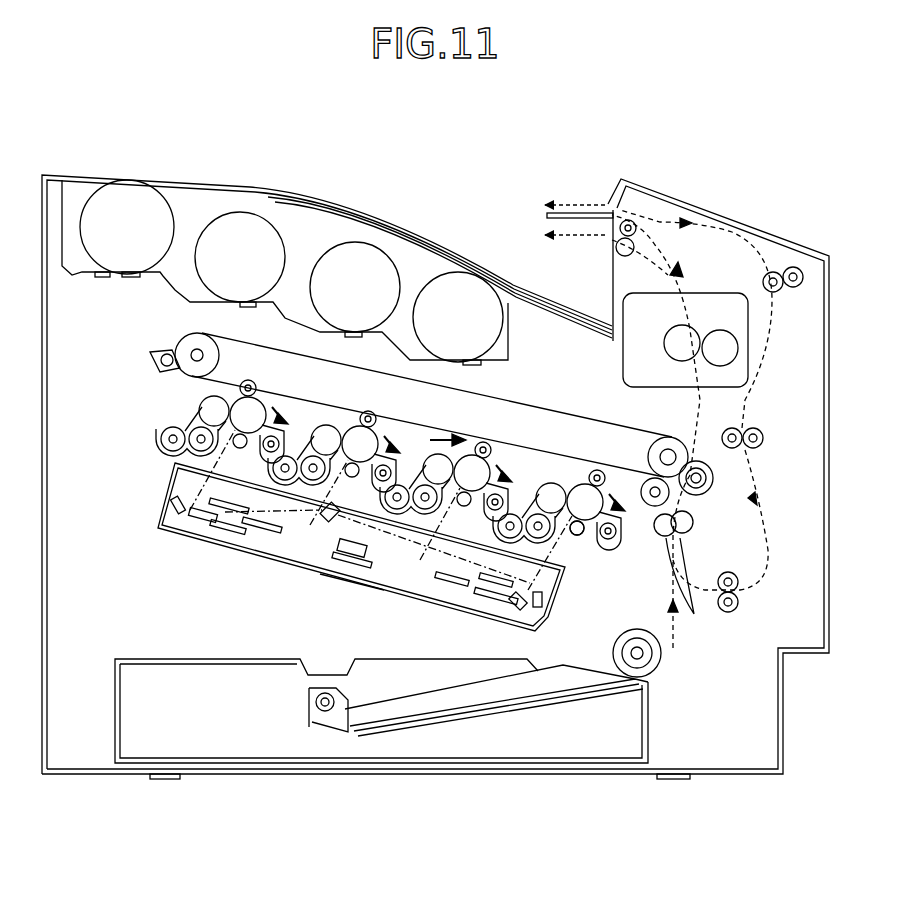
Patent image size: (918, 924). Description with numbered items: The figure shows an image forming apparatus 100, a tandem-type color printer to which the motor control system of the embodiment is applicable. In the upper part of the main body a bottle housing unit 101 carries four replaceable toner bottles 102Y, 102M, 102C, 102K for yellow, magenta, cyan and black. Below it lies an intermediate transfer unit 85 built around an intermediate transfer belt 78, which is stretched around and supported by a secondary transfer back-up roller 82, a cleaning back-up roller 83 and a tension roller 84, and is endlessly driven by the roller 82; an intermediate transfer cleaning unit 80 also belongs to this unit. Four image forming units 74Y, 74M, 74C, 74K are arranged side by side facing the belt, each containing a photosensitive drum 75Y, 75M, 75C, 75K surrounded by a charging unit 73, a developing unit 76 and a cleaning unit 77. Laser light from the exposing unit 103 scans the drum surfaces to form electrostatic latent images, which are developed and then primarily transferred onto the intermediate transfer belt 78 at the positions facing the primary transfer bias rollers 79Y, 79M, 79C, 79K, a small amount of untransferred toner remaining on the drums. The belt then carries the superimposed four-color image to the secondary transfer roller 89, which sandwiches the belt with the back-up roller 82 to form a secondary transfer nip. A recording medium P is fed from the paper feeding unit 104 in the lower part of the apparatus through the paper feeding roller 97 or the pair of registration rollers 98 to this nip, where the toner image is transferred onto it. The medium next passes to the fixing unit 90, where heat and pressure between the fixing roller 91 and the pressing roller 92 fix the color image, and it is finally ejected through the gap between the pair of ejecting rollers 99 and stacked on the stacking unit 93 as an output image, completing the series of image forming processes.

The image forming apparatus 100 is at (296, 184).
The stacking unit 93 is at (432, 236).
The pair of ejecting rollers 99 is at (618, 238).
The fixing unit 90 is at (710, 296).
The fixing roller 91 is at (670, 330).
The pressing roller 92 is at (740, 350).
The toner bottle 102Y is at (120, 258).
The toner bottle 102M is at (212, 238).
The toner bottle 102C is at (330, 262).
The toner bottle 102K is at (505, 328).
The bottle housing unit 101 is at (175, 288).
The intermediate transfer belt 78 is at (340, 368).
The cleaning back-up roller 83 is at (196, 378).
The intermediate transfer cleaning unit 80 is at (150, 362).
The tension roller 84 is at (657, 442).
The secondary transfer back-up roller 82 is at (658, 476).
The intermediate transfer unit 85 is at (557, 404).
The photosensitive drum 75Y is at (248, 438).
The photosensitive drum 75M is at (360, 426).
The photosensitive drum 75C is at (470, 497).
The photosensitive drum 75K is at (575, 490).
The primary transfer bias roller 79Y is at (257, 388).
The primary transfer bias roller 79M is at (378, 416).
The primary transfer bias roller 79C is at (486, 443).
The primary transfer bias roller 79K is at (597, 470).
The cleaning unit 77 is at (624, 540).
The charging unit 73 is at (584, 536).
The secondary transfer roller 89 is at (704, 494).
The pair of registration rollers 98 is at (690, 614).
The exposing unit 103 is at (220, 548).
The image forming unit 74Y is at (206, 458).
The image forming unit 74M is at (353, 496).
The image forming unit 74C is at (427, 524).
The image forming unit 74K is at (573, 548).
The developing unit 76 is at (518, 540).
The paper feeding unit 104 is at (352, 700).
The recording medium P is at (425, 716).
The paper feeding roller 97 is at (658, 672).